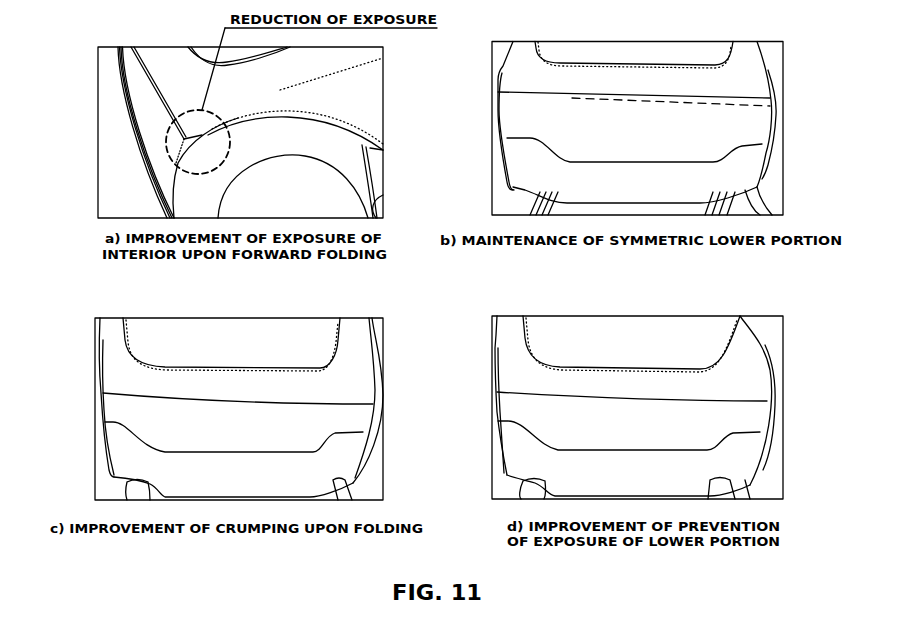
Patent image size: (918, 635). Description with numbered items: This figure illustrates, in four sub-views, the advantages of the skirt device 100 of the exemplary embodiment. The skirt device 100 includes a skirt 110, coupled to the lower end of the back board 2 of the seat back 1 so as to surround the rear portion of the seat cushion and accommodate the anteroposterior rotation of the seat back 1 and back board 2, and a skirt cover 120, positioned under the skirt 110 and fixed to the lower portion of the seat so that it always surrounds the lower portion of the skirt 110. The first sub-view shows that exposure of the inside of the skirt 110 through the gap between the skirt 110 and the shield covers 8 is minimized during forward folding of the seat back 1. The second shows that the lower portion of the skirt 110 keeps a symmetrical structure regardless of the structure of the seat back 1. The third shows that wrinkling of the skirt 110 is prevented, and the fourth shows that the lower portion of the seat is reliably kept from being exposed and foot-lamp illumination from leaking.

The seat back 1 is at (337, 83).
The back board 2 is at (170, 72).
The shield covers 8 is at (308, 145).
The skirt device 100 is at (437, 272).
The skirt 110 is at (155, 120).
The skirt cover 120 is at (437, 317).